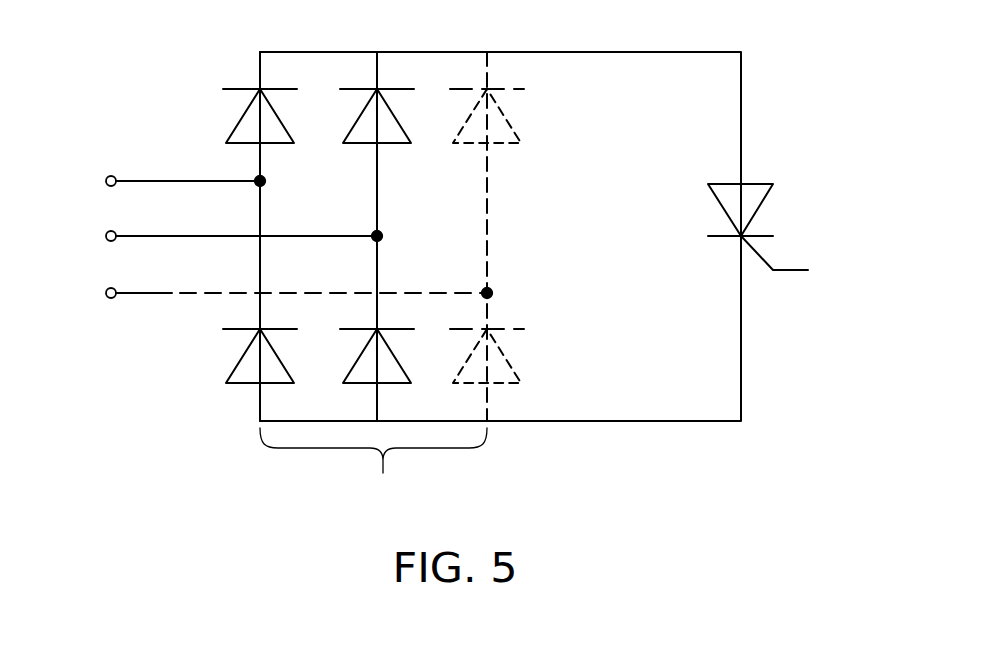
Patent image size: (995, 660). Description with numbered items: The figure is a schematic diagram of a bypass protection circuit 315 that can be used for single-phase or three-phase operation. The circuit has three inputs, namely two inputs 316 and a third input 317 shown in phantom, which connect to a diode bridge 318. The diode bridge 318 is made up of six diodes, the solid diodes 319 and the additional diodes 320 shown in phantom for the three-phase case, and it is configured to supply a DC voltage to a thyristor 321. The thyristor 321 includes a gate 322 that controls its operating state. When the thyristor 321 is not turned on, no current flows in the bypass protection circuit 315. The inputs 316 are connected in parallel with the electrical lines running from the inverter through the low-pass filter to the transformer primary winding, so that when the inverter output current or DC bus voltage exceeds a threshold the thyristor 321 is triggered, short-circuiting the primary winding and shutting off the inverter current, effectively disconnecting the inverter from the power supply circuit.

The bypass protection circuit 315 is at (828, 92).
The inputs 316 is at (92, 203).
The input 317 is at (79, 336).
The diode bridge 318 is at (364, 495).
The diodes 319 is at (282, 147).
The diodes 320 is at (512, 120).
The thyristor 321 is at (832, 258).
The gate 322 is at (779, 278).